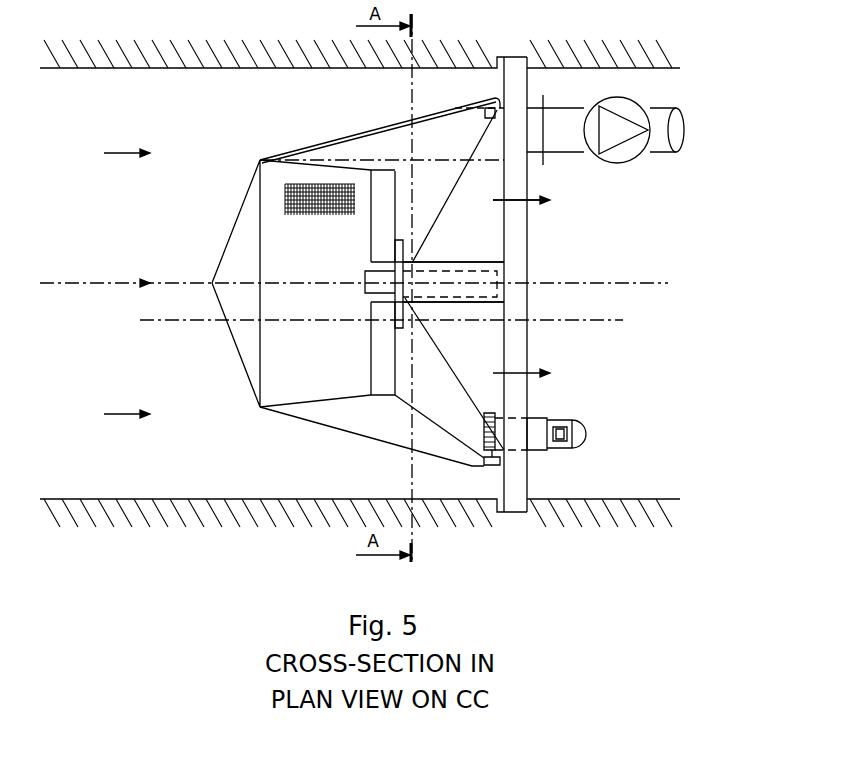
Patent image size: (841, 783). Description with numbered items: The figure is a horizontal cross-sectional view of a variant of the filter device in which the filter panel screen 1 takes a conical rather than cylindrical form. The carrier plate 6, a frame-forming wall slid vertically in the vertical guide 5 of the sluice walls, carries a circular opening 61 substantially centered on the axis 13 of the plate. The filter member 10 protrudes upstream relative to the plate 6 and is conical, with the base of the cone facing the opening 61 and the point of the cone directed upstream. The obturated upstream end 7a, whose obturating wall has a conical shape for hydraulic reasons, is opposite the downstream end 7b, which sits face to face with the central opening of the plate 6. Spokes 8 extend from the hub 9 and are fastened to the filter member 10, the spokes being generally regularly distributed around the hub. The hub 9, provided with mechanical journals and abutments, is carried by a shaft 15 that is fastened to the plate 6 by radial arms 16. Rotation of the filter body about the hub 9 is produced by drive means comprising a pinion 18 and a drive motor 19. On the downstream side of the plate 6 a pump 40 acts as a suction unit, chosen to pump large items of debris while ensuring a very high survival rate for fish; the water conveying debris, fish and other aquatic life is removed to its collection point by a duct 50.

The cylindrical filter panel screen 1 is at (228, 455).
The vertical guide 5 is at (512, 57).
The carrier plate 6 is at (522, 328).
The upstream end 7a is at (228, 219).
The downstream end 7b is at (497, 240).
The spokes 8 is at (376, 224).
The hub 9 is at (393, 300).
The filter member 10 is at (285, 197).
The axis 13 is at (518, 282).
The shaft 15 is at (453, 295).
The radial arms 16 is at (447, 212).
The pinion 18 is at (497, 415).
The drive motor 19 is at (560, 450).
The pump 40 is at (615, 165).
The duct 50 is at (665, 155).
The circular opening 61 is at (518, 218).